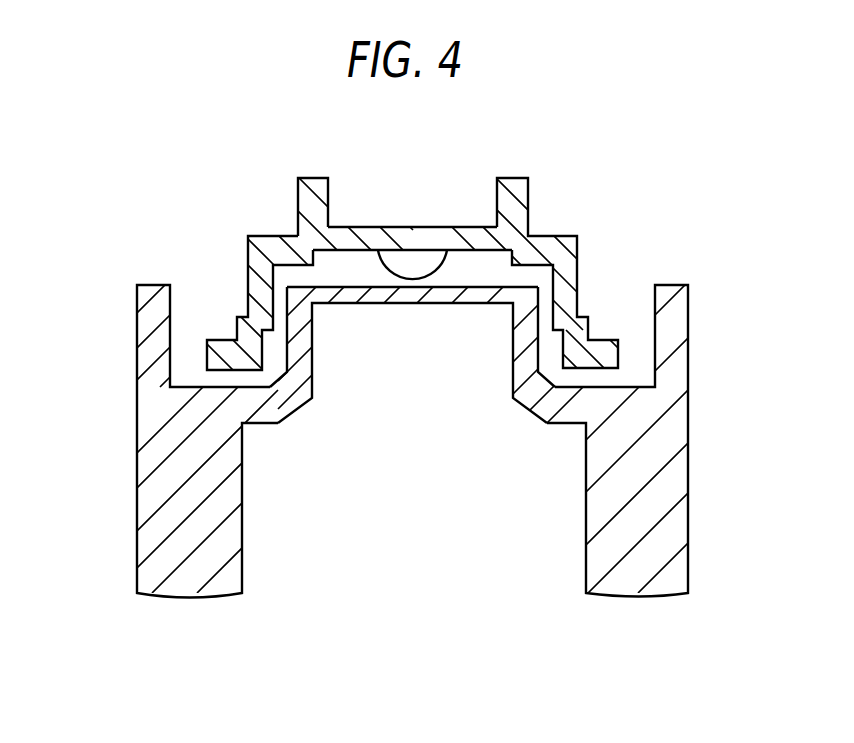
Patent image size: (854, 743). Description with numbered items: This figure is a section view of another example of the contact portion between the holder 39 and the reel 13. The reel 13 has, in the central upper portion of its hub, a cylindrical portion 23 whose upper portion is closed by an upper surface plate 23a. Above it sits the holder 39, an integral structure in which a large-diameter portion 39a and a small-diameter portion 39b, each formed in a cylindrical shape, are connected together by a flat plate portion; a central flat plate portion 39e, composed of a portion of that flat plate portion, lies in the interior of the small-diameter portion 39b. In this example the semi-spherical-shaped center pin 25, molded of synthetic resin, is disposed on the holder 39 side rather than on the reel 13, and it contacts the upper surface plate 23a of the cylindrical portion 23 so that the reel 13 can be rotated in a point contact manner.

The reel 13 is at (125, 270).
The cylindrical portion 23 is at (305, 375).
The upper surface plate 23a is at (473, 303).
The center pin 25 is at (405, 273).
The holder 39 is at (558, 236).
The large-diameter portion 39a is at (248, 255).
The small-diameter portion 39b is at (298, 195).
The central flat plate portion 39e is at (404, 227).